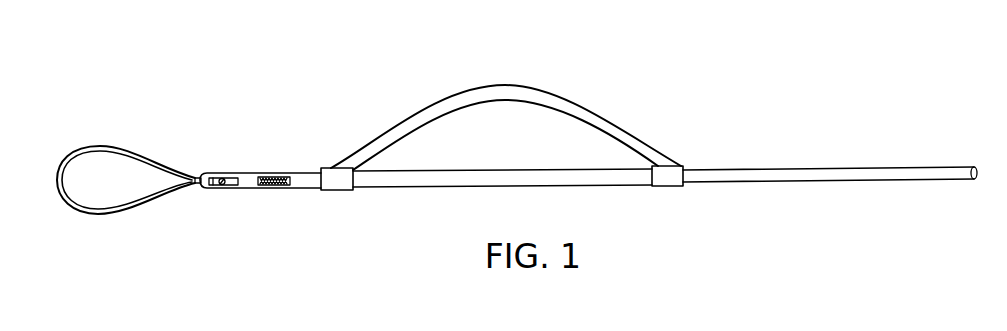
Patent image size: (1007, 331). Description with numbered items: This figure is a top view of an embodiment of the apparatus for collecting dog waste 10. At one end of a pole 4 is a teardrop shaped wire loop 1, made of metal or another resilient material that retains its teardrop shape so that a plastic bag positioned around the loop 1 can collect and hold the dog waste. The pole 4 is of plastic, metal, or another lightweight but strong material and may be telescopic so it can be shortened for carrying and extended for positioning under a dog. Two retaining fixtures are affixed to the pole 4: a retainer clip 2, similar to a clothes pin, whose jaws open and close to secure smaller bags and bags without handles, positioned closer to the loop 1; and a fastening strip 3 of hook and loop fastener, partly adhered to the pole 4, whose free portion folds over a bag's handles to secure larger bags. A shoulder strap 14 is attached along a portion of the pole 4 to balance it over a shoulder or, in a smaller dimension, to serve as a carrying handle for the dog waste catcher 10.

The teardrop shaped wire loop 1 is at (120, 147).
The retainer clip 2 is at (226, 177).
The fastening strip 3 is at (279, 176).
The pole 4 is at (479, 177).
The apparatus for collecting dog waste 10 is at (407, 97).
The shoulder strap 14 is at (590, 121).